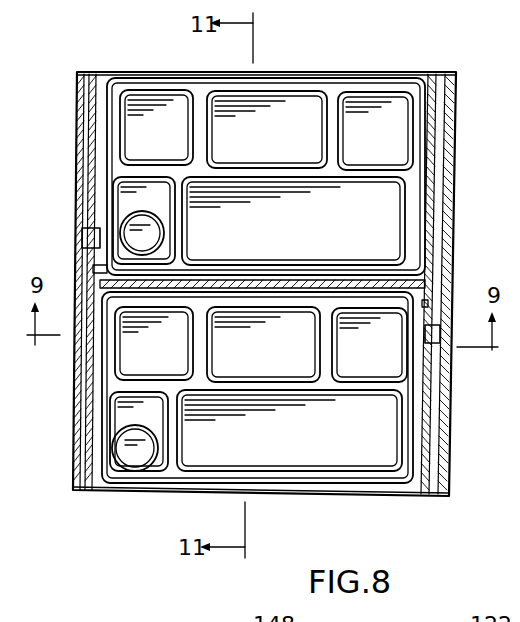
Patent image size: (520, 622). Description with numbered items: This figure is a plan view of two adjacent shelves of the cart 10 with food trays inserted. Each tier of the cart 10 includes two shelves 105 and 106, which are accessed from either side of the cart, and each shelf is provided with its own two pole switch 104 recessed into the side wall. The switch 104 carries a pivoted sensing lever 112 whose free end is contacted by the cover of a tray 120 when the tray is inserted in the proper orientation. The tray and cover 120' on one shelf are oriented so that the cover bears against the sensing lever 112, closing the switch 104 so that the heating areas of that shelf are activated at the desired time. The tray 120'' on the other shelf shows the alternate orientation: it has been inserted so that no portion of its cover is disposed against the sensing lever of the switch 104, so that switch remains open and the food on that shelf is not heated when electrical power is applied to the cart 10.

The cart 10 is at (466, 205).
The two pole switch 104 is at (85, 235).
The shelf 105 is at (412, 78).
The shelf 106 is at (392, 497).
The sensing lever 112 is at (470, 284).
The tray 120 is at (222, 415).
The tray and cover 120' is at (289, 467).
The tray 120'' is at (260, 164).